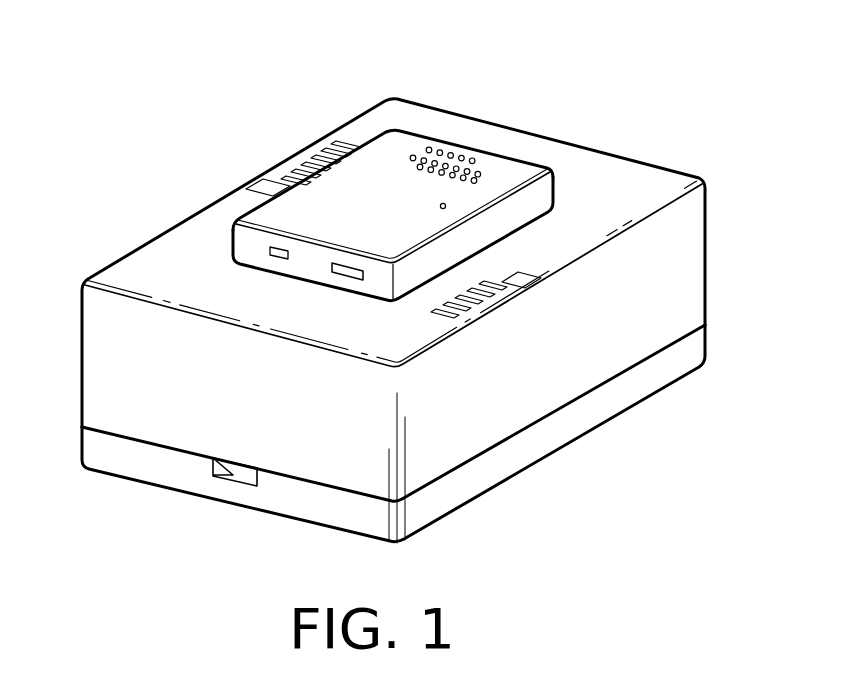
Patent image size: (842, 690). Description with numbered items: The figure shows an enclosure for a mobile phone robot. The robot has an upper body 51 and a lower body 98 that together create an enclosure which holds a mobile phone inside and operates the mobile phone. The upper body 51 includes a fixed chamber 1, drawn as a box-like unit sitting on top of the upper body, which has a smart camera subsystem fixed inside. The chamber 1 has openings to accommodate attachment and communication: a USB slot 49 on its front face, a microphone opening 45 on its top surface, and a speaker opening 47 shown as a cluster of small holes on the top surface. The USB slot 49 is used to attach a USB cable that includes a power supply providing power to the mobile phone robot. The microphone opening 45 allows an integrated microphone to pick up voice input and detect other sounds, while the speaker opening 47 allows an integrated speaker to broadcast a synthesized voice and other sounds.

The fixed chamber 1 is at (399, 278).
The microphone opening 45 is at (452, 202).
The speaker opening 47 is at (408, 149).
The USB slot 49 is at (343, 280).
The upper body 51 is at (652, 160).
The lower body 98 is at (670, 386).